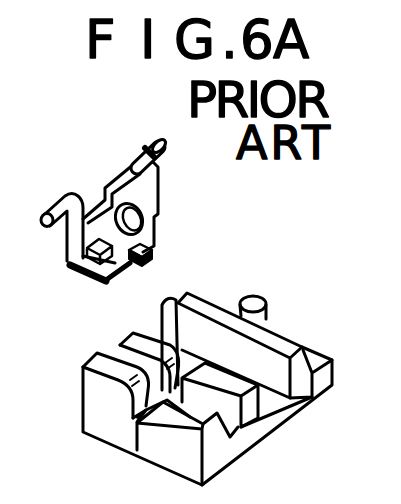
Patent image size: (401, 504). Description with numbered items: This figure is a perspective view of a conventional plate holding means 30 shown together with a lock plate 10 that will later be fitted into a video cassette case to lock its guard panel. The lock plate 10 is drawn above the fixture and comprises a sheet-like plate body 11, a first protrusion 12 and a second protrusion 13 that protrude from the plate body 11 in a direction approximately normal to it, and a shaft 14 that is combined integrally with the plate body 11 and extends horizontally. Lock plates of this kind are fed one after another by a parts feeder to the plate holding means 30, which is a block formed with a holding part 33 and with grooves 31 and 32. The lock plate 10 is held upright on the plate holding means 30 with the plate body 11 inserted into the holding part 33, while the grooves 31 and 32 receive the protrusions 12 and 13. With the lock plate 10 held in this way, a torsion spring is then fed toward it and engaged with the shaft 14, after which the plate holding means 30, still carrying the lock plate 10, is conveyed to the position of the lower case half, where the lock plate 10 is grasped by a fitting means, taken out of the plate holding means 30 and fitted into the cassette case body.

The lock plate 10 is at (80, 178).
The plate body 11 is at (158, 186).
The first protrusion 12 is at (70, 266).
The second protrusion 13 is at (154, 247).
The shaft 14 is at (124, 170).
The plate holding means 30 is at (293, 296).
The groove 31 is at (234, 430).
The groove 32 is at (283, 400).
The holding part 33 is at (135, 424).